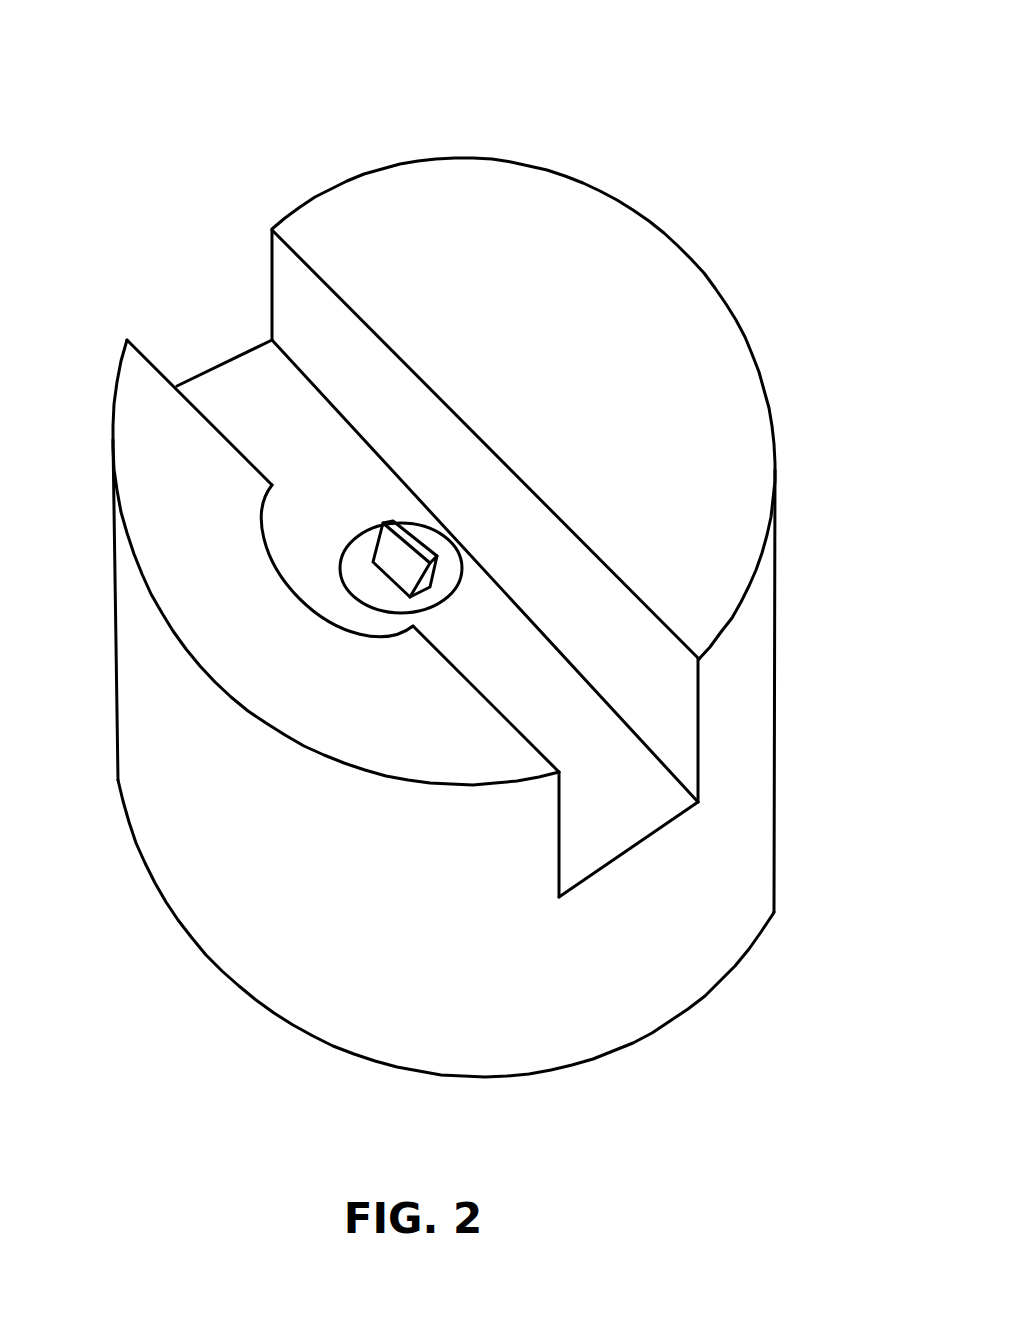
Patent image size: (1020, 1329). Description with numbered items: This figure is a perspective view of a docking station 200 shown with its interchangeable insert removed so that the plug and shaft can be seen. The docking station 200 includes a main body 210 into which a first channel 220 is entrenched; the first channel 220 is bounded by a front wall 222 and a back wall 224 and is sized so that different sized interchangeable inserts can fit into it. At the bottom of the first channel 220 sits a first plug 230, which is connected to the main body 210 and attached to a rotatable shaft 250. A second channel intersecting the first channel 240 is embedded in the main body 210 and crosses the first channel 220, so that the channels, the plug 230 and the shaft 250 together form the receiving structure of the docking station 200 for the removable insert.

The docking station 200 is at (579, 130).
The main body 210 is at (168, 732).
The first channel 220 is at (277, 440).
The front wall 222 is at (153, 360).
The back wall 224 is at (313, 330).
The first plug 230 is at (437, 562).
The second channel intersecting the first channel 240 is at (277, 565).
The shaft 250 is at (387, 593).